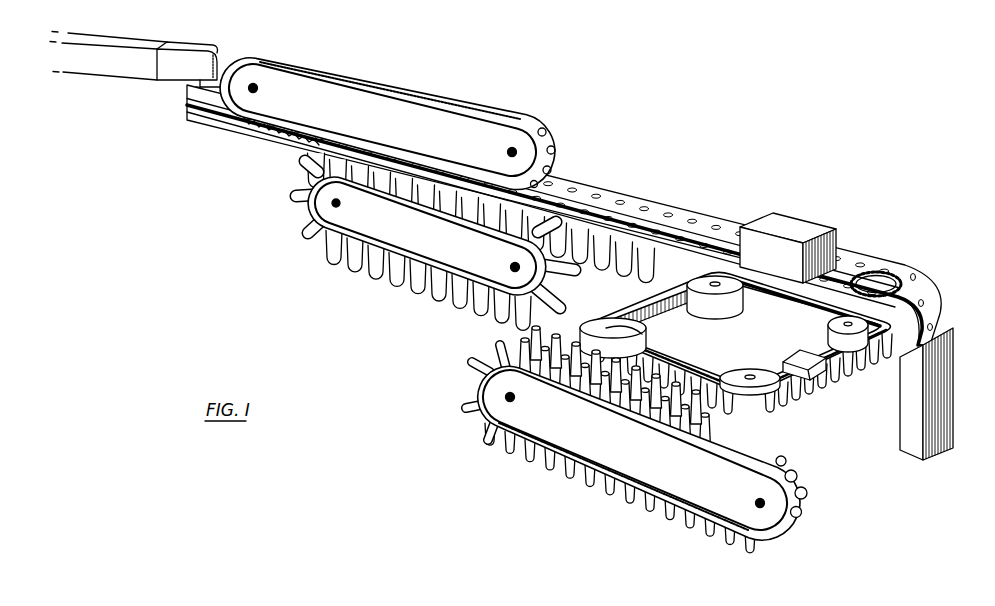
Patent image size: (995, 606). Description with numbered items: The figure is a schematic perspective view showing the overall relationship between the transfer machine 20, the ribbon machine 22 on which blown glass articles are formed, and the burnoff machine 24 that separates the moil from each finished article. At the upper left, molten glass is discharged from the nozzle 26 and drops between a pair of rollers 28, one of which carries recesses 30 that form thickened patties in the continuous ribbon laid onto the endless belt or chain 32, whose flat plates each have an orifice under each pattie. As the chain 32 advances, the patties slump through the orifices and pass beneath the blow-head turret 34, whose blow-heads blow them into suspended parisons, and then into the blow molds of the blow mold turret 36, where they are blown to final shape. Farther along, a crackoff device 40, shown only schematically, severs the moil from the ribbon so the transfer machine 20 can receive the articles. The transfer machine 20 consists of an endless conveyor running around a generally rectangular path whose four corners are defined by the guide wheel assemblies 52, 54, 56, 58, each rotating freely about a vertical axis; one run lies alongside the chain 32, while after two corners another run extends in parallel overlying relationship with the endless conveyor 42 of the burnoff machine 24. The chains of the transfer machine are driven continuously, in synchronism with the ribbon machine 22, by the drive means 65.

The transfer machine 20 is at (836, 408).
The ribbon machine 22 is at (580, 172).
The burnoff machine 24 is at (608, 443).
The nozzle 26 is at (216, 80).
The rollers 28 is at (190, 97).
The recesses 30 is at (217, 117).
The endless belt or chain 32 is at (253, 122).
The blow-head turret 34 is at (422, 79).
The blow mold turret 36 is at (376, 224).
The crackoff device 40 is at (790, 212).
The endless conveyor 42 is at (803, 486).
The guide wheel assembly 52 is at (720, 286).
The guide wheel assembly 54 is at (844, 324).
The guide wheel assembly 56 is at (748, 375).
The guide wheel assembly 58 is at (644, 335).
The drive means 65 is at (795, 358).